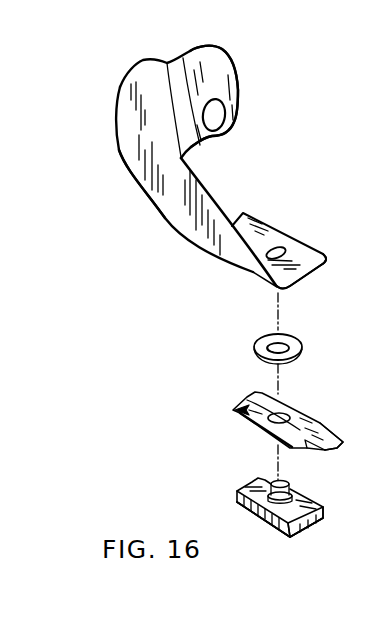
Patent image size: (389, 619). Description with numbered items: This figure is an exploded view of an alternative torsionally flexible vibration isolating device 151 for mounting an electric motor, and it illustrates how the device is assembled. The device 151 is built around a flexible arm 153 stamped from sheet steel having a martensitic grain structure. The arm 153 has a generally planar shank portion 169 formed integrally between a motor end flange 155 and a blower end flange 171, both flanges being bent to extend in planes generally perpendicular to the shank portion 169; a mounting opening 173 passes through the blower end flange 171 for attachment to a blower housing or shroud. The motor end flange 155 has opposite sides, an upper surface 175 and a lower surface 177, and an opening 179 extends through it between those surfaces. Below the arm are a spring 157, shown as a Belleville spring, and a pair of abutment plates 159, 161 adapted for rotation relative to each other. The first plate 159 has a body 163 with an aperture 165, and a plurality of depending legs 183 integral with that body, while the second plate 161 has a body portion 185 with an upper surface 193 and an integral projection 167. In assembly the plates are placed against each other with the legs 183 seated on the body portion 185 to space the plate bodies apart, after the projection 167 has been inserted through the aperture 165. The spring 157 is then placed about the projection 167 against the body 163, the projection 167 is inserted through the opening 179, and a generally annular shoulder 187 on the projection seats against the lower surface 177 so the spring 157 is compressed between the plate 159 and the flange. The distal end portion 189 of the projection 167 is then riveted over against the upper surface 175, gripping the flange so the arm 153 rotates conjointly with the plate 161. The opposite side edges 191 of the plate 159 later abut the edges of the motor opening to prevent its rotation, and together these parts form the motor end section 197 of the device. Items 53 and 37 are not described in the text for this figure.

The torsionally flexible vibration isolating device 151 is at (92, 171).
The flexible arm 153 is at (143, 183).
The shank portion 169 is at (177, 207).
The blower end flange 171 is at (217, 67).
The mounting opening 173 is at (232, 139).
The motor end flange 155 is at (262, 223).
The upper surface 175 is at (312, 258).
The lower surface 177 is at (310, 277).
The opening 179 is at (280, 251).
The motor end section 197 is at (176, 354).
The spring 157 is at (302, 349).
The abutment plate 159 is at (246, 397).
The body 163 is at (307, 417).
The aperture 165 is at (260, 430).
The depending legs 183 is at (233, 408).
The abutment plate 161 is at (247, 485).
The body portion 185 is at (235, 497).
The shoulder 187 is at (295, 492).
The distal end portion 189 is at (292, 488).
The side edges 191 is at (281, 536).
The upper surface 193 is at (327, 505).
The projection 167 is at (267, 517).
The frame member 53 is at (373, 46).
The frame portion 37 is at (388, 133).